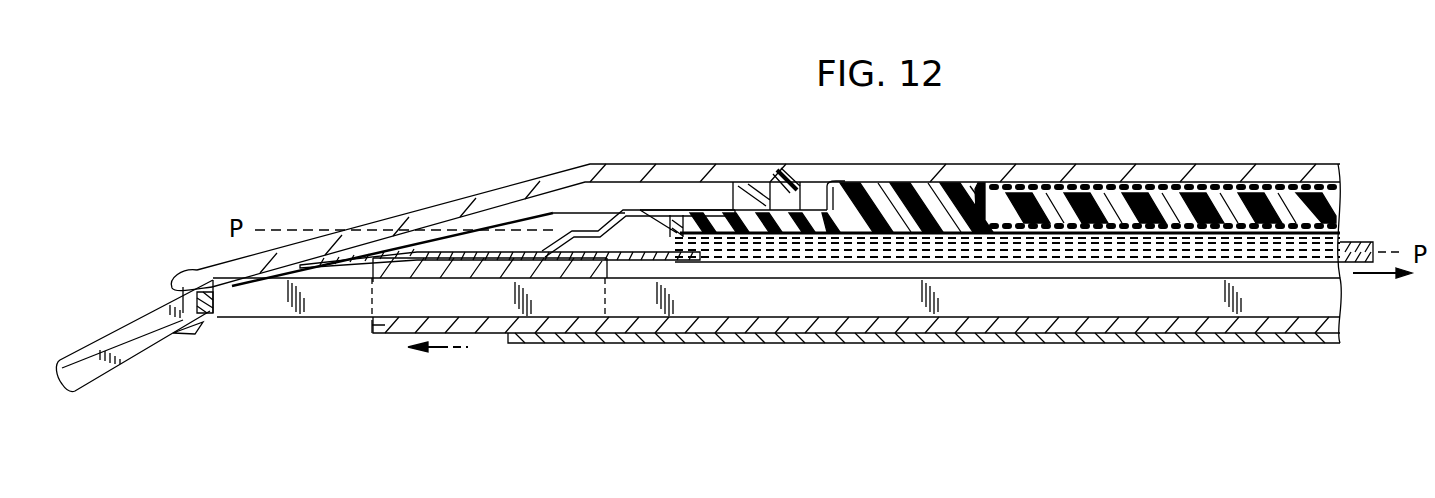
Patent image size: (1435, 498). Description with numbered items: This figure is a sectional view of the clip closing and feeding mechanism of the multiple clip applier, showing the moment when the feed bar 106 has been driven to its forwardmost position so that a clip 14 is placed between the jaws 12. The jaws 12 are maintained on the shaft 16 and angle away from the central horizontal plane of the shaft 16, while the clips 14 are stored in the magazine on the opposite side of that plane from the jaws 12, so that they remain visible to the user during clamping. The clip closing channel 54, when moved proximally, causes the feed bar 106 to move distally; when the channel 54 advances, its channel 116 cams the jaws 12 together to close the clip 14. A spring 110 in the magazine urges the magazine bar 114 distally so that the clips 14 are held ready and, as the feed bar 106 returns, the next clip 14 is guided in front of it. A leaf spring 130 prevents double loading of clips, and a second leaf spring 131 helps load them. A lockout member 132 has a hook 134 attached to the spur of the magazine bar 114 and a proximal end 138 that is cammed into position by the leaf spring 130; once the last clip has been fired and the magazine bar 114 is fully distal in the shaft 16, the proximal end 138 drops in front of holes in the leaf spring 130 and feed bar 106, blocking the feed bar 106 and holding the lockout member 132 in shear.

The jaws 12 is at (187, 268).
The clip 14 is at (142, 337).
The shaft 16 is at (701, 344).
The clip closing channel 54 is at (479, 334).
The feed bar 106 is at (868, 224).
The spring 110 is at (1092, 182).
The magazine bar 114 is at (962, 186).
The channel 116 is at (371, 324).
The leaf spring 130 is at (787, 265).
The leaf spring 131 is at (689, 250).
The lockout member 132 is at (838, 212).
The hook 134 is at (733, 208).
The proximal end 138 is at (1257, 251).